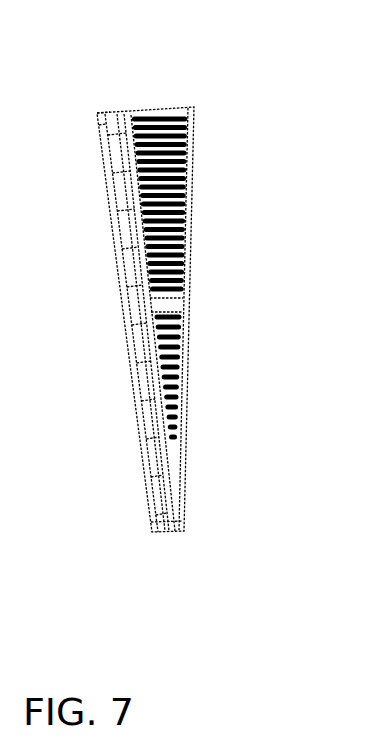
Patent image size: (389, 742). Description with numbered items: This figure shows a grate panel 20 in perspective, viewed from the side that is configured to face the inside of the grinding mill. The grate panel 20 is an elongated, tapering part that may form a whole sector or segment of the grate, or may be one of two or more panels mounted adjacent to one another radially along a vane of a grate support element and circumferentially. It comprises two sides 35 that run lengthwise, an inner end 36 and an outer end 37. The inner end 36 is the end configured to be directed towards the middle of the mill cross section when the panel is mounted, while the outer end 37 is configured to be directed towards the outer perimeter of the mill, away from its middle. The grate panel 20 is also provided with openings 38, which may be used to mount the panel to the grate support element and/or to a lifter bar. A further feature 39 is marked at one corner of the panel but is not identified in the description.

The grate panel 20 is at (245, 252).
The sides 35 is at (205, 182).
The inner end 36 is at (172, 315).
The outer end 37 is at (158, 98).
The openings 38 is at (143, 388).
The corner tip 39 is at (98, 108).